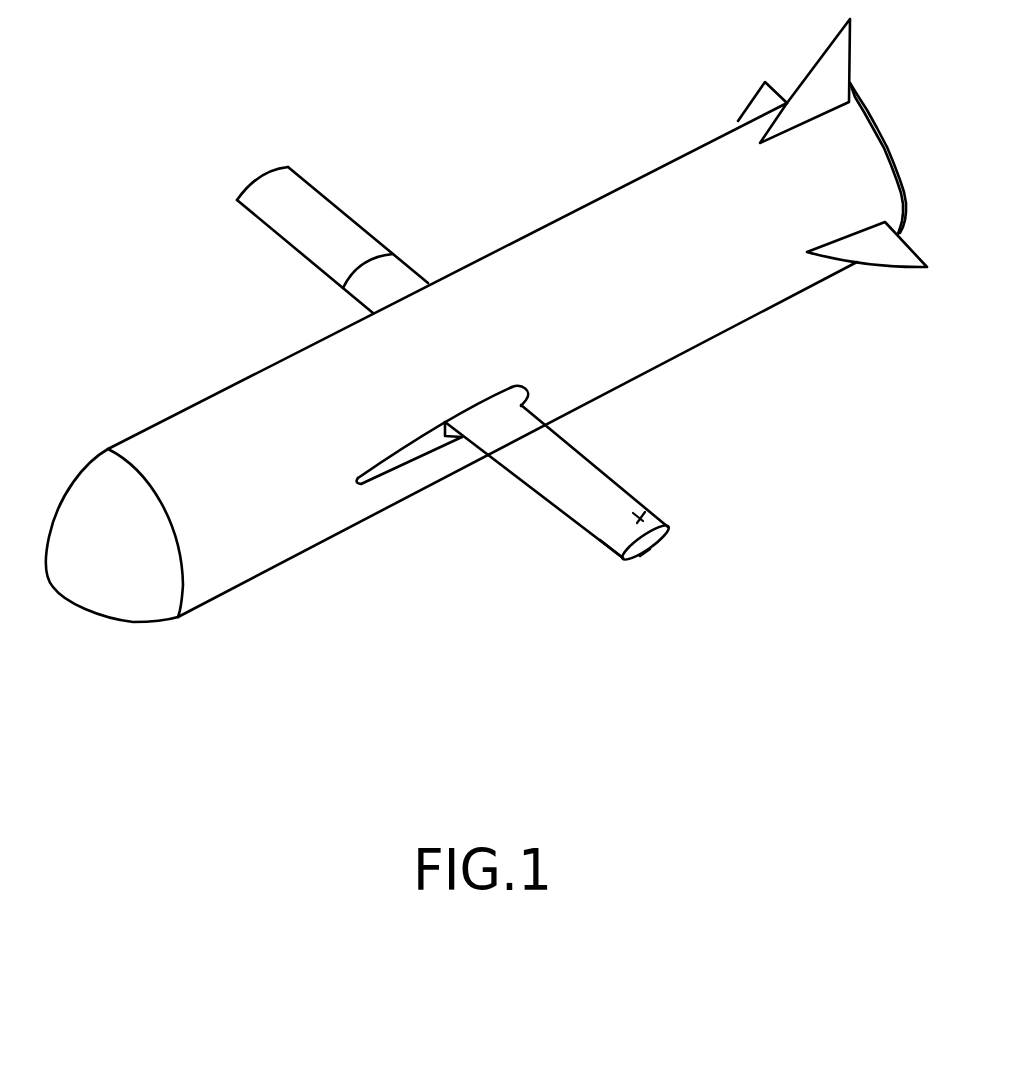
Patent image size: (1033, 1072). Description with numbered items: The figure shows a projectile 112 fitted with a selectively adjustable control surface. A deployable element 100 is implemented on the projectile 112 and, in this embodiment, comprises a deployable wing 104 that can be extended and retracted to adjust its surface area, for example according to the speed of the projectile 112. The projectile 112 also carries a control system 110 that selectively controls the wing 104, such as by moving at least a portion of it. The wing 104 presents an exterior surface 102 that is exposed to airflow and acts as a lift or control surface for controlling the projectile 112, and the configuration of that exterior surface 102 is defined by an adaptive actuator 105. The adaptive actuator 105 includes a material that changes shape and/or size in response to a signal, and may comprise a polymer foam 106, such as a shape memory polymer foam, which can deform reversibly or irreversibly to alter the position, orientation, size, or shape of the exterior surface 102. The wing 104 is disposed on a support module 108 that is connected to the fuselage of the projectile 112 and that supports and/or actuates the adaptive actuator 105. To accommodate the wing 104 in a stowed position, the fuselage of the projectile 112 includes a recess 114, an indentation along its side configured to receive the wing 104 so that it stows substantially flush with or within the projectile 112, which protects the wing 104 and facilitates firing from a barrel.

The deployable element 100 is at (558, 503).
The exterior surface 102 is at (640, 518).
The deployable wing 104 is at (655, 542).
The adaptive actuator 105 is at (647, 552).
The polymer foam 106 is at (613, 538).
The support module 108 is at (515, 408).
The control system 110 is at (163, 612).
The projectile 112 is at (732, 305).
The recess 114 is at (397, 462).